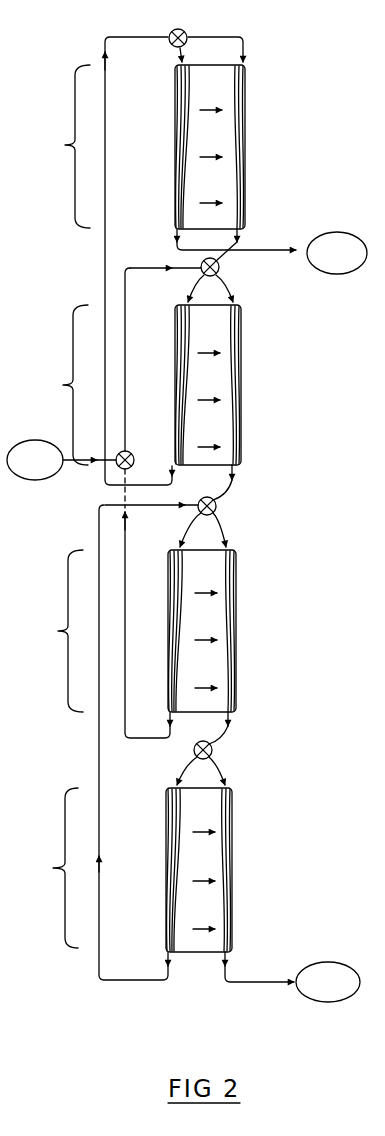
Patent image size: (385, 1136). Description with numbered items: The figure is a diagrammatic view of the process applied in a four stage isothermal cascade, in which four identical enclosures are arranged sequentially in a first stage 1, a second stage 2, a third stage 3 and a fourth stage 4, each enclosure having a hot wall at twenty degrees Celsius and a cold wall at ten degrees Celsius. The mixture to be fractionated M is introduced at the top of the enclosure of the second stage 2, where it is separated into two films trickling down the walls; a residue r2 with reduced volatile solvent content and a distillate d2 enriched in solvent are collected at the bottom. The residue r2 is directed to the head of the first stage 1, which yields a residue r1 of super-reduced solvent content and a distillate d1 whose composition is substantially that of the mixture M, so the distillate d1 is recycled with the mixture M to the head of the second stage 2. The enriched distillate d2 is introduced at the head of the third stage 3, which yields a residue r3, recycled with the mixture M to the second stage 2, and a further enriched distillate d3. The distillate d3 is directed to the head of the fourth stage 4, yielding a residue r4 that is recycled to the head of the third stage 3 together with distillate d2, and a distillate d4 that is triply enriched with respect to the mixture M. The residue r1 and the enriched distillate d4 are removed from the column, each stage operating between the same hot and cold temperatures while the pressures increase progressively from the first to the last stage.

The first stage 1 is at (69, 146).
The second stage 2 is at (66, 385).
The third stage 3 is at (61, 631).
The fourth stage 4 is at (57, 868).
The mixture to be fractionated M is at (61, 460).
The residue r1 is at (272, 251).
The residue r2 is at (137, 388).
The residue r3 is at (147, 726).
The residue r4 is at (134, 1003).
The distillate d1 is at (240, 236).
The distillate d2 is at (236, 471).
The distillate d3 is at (232, 715).
The distillate d4 is at (259, 983).
The final extract product d is at (328, 982).